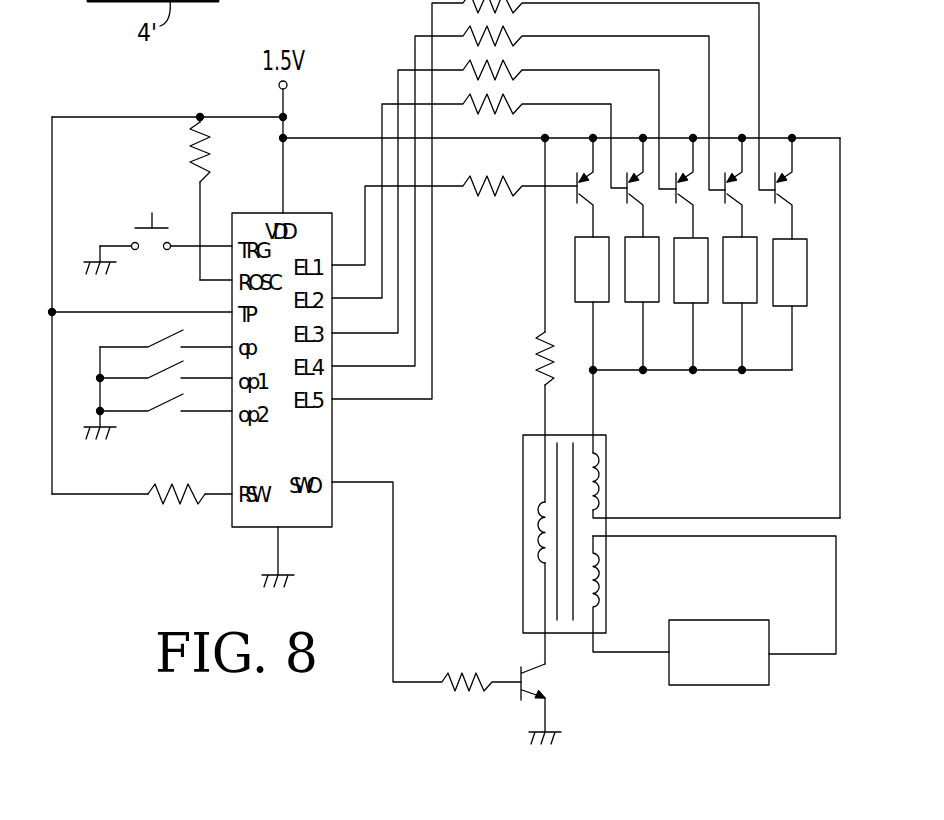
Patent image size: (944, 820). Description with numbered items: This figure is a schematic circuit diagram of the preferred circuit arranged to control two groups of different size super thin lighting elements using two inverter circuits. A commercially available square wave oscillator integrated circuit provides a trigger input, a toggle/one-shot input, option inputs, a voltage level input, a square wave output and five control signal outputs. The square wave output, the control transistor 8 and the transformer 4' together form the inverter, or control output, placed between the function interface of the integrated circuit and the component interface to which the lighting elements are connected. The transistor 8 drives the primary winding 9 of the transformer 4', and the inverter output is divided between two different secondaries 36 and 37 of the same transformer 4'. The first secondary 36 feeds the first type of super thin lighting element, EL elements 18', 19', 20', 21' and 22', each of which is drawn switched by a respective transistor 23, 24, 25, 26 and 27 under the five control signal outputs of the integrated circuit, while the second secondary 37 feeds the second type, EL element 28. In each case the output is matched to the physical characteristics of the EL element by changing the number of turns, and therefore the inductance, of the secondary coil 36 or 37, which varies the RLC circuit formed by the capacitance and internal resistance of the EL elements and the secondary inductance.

The transformer 4' is at (564, 578).
The control transistor 8 is at (527, 693).
The primary winding 9 is at (535, 527).
The EL element 18' is at (607, 328).
The EL element 19' is at (658, 333).
The EL element 20' is at (707, 338).
The EL element 21' is at (749, 325).
The EL element 22' is at (794, 348).
The drive transistor 23 is at (577, 177).
The drive transistor 24 is at (628, 177).
The drive transistor 25 is at (677, 177).
The drive transistor 26 is at (726, 177).
The drive transistor 27 is at (776, 177).
The EL element 28 is at (710, 672).
The transformer secondary 36 is at (598, 488).
The transformer secondary 37 is at (603, 568).